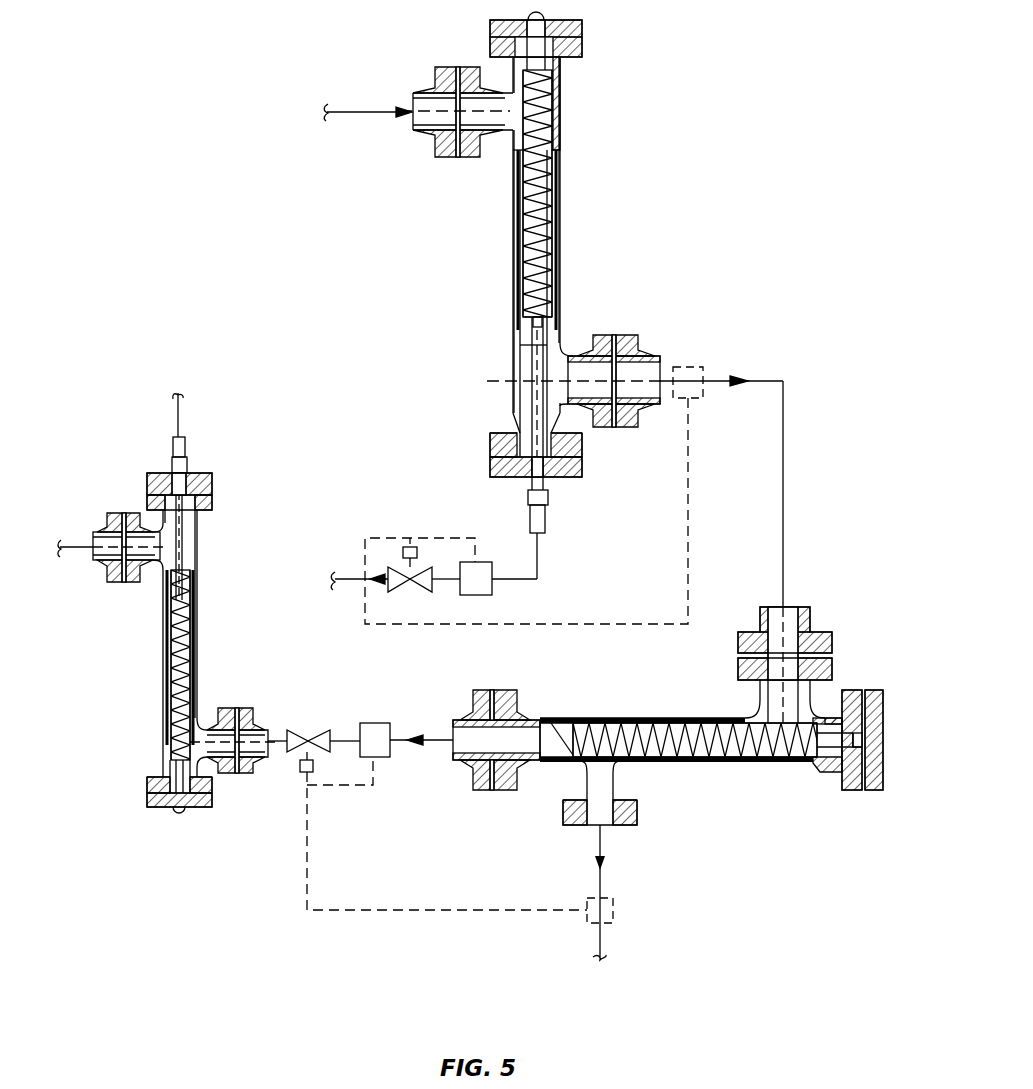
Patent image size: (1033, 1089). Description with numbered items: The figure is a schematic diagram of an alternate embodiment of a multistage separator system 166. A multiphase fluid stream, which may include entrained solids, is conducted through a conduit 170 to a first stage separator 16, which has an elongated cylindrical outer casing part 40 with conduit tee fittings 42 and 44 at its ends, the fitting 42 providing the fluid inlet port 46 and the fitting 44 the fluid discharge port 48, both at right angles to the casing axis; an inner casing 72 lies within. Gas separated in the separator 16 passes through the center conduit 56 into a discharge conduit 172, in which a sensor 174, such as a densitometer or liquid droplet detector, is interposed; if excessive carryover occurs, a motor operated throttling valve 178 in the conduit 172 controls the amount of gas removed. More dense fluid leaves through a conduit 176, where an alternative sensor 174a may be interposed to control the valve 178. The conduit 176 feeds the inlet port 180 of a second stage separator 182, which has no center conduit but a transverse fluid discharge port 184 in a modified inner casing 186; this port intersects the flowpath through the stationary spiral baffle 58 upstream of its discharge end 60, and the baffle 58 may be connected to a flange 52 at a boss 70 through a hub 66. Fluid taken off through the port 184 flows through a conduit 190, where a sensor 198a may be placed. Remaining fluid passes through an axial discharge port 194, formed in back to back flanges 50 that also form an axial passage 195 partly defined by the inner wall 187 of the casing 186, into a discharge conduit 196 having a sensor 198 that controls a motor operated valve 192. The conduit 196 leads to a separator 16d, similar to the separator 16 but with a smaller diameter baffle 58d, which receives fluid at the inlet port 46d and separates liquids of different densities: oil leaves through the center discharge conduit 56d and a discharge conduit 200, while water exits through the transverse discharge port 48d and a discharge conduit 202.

The first stage separator 16 is at (587, 177).
The separator 16d is at (221, 592).
The outer casing part 40 is at (560, 222).
The conduit tee fitting 42 is at (560, 118).
The conduit tee fitting 44 is at (512, 358).
The fluid inlet port 46 is at (472, 100).
The fluid inlet port 46d is at (222, 768).
The fluid discharge port 48 is at (586, 358).
The transverse discharge port 48d is at (152, 563).
The back to back flanges 50 is at (487, 790).
The flange 52 is at (878, 792).
The conduit 56 is at (518, 428).
The center discharge conduit 56d is at (198, 522).
The stationary spiral baffle 58 is at (560, 251).
The baffle 58d is at (195, 650).
The discharge end 60 is at (550, 720).
The hub 66 is at (834, 762).
The boss 70 is at (855, 792).
The inner casing 72 is at (512, 242).
The separator system 166 is at (289, 311).
The conduit 170 is at (352, 112).
The discharge conduit 172 is at (512, 580).
The sensor 174 is at (495, 565).
The sensor 174a is at (690, 367).
The conduit 176 is at (763, 381).
The motor operated throttling valve 178 is at (392, 567).
The inlet port 180 is at (812, 680).
The second stage separator 182 is at (723, 770).
The transverse fluid discharge port 184 is at (583, 775).
The inner casing 186 is at (575, 723).
The inner wall 187 is at (547, 722).
The conduit 190 is at (600, 945).
The motor operated valve 192 is at (292, 730).
The axial discharge port 194 is at (454, 757).
The axial passage 195 is at (472, 718).
The discharge conduit 196 is at (430, 738).
The sensor 198 is at (380, 758).
The sensor 198a is at (615, 905).
The discharge conduit 200 is at (183, 423).
The discharge conduit 202 is at (62, 540).